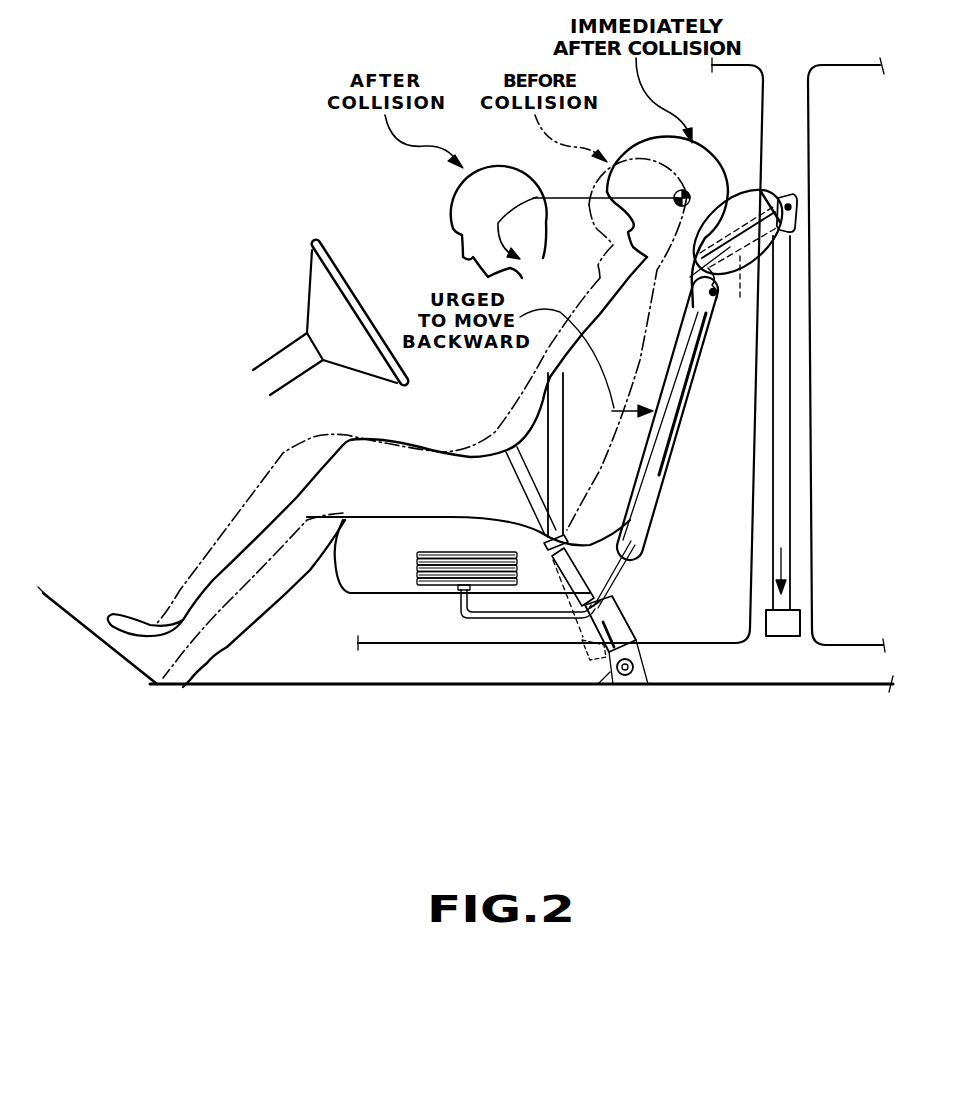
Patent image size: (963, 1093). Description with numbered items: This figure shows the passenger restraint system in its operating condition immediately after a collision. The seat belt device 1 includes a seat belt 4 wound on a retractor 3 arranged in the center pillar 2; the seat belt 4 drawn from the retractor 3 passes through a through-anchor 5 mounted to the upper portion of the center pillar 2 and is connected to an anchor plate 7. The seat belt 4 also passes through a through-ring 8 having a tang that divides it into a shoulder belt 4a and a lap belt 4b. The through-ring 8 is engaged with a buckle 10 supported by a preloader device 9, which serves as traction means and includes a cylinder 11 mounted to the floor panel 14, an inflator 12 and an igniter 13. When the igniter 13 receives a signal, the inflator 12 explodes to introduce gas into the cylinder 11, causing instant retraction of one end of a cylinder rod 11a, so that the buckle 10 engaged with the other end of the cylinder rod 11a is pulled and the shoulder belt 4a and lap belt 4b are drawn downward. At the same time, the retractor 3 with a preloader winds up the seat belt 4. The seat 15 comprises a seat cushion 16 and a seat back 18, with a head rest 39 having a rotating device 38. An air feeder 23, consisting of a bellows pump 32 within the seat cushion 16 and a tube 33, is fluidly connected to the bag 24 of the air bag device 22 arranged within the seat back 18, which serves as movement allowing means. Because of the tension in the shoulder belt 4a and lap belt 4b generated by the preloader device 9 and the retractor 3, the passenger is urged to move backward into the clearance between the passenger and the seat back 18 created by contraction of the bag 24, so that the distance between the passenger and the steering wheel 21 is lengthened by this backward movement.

The seat belt device 1 is at (540, 405).
The center pillar 2 is at (798, 393).
The retractor 3 is at (790, 622).
The seat belt 4 is at (782, 446).
The shoulder belt 4a is at (730, 288).
The lap belt 4b is at (510, 448).
The through-anchor 5 is at (802, 200).
The anchor plate 7 is at (600, 653).
The through-ring 8 is at (543, 536).
The preloader device 9 is at (631, 613).
The buckle 10 is at (577, 580).
The cylinder 11 is at (590, 667).
The cylinder rod 11a is at (612, 606).
The inflator 12 is at (624, 630).
The igniter 13 is at (630, 645).
The floor panel 14 is at (632, 683).
The seat 15 is at (708, 339).
The seat cushion 16 is at (353, 584).
The seat back 18 is at (697, 362).
The steering wheel 21 is at (323, 250).
The air bag device 22 is at (662, 468).
The air feeder 23 is at (425, 555).
The bag 24 is at (655, 480).
The pump 32 is at (453, 551).
The tube 33 is at (462, 615).
The rotating device 38 is at (740, 186).
The head rest 39 is at (768, 246).